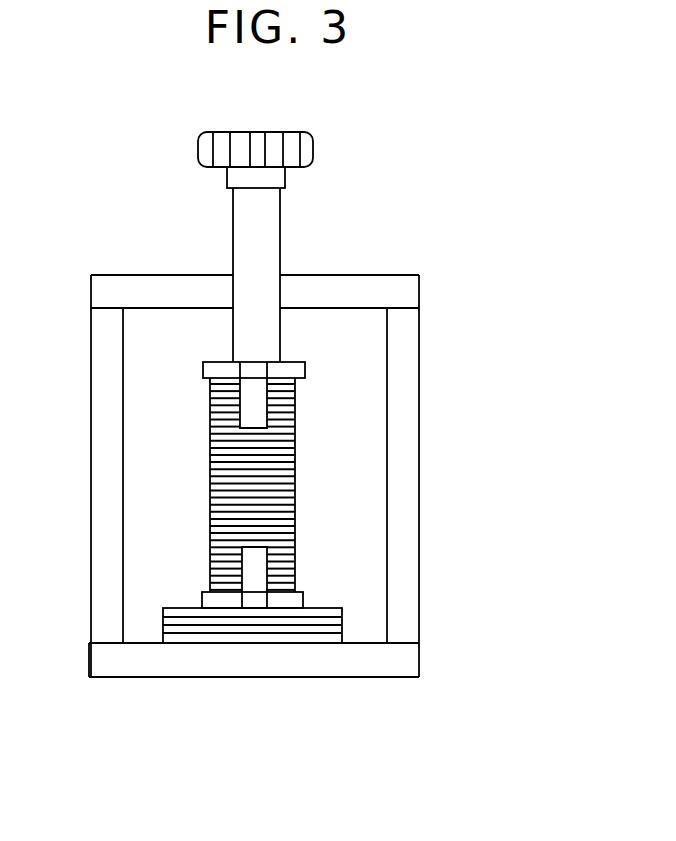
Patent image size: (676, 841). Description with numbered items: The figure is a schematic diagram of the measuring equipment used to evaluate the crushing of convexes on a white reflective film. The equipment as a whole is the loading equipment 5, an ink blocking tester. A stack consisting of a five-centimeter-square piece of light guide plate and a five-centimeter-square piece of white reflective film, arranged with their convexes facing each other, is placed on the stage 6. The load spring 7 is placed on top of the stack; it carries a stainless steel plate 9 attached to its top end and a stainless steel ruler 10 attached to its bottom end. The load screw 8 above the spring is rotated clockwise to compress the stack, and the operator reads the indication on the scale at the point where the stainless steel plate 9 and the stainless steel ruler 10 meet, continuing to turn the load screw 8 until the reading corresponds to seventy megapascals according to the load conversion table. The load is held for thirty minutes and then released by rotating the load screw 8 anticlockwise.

The loading equipment 5 is at (477, 100).
The stage 6 is at (117, 663).
The load spring 7 is at (295, 422).
The load screw 8 is at (283, 222).
The stainless steel plate 9 is at (252, 407).
The stainless steel ruler 10 is at (252, 585).